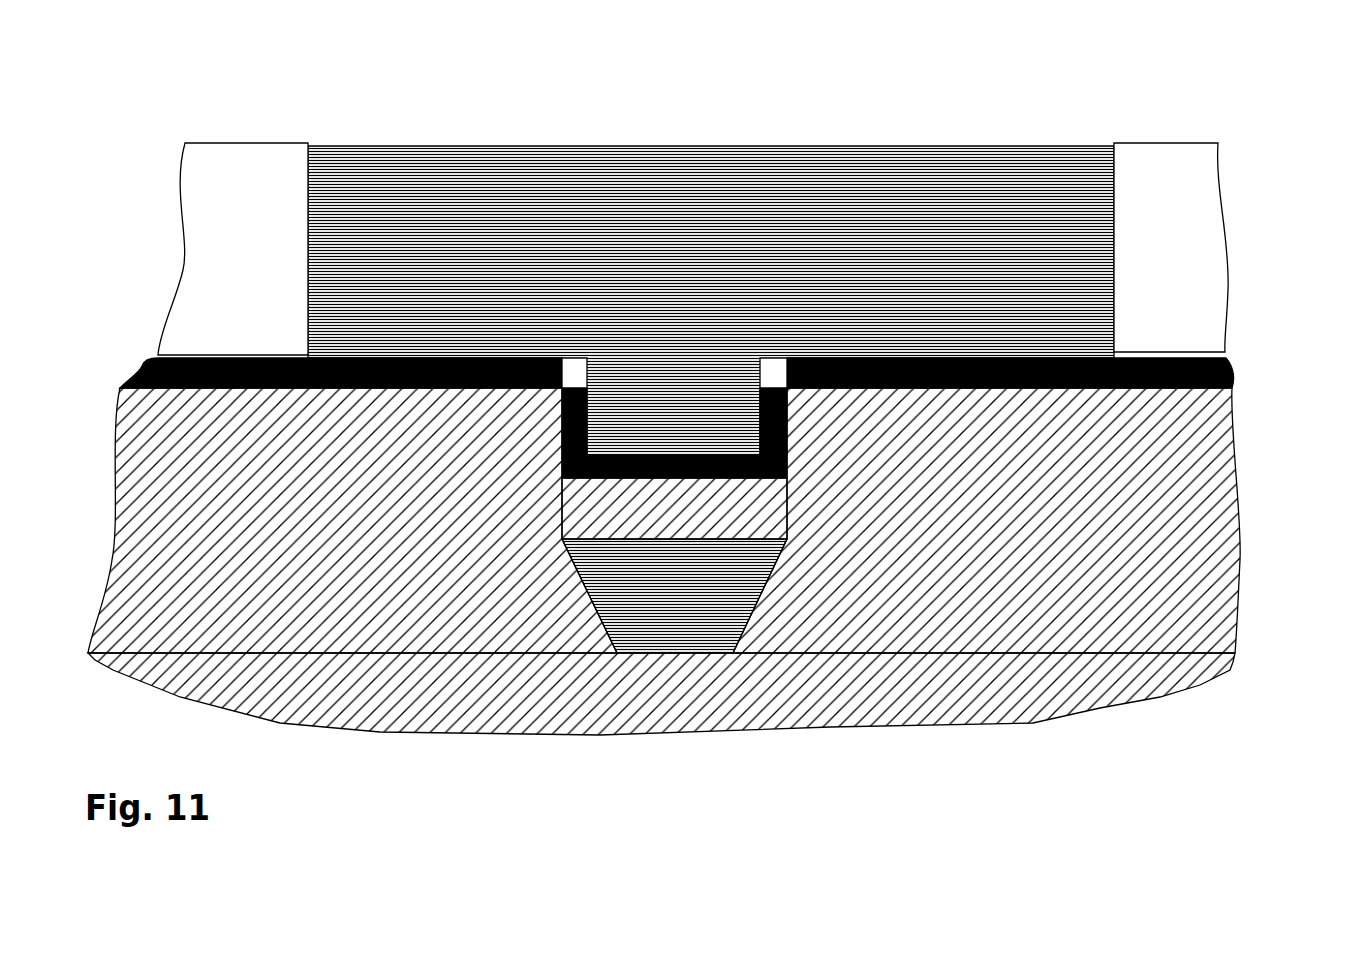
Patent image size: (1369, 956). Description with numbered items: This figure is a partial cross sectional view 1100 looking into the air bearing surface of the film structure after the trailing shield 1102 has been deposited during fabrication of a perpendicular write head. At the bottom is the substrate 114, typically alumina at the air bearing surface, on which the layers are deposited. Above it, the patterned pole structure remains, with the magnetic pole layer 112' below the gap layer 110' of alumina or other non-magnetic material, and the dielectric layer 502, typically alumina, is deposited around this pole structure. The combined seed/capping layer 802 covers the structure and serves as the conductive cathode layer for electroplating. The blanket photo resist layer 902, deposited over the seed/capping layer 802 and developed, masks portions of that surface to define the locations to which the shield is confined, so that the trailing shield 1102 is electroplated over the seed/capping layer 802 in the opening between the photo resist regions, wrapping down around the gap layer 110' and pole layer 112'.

The partial cross sectional view 1100 is at (927, 121).
The trailing shield 1102 is at (665, 273).
The photo resist layer 902 is at (217, 268).
The seed/capping layer 802 is at (1235, 370).
The dielectric layer 502 is at (347, 585).
The gap layer 110' is at (674, 508).
The pole layer 112' is at (674, 596).
The substrate 114 is at (625, 718).